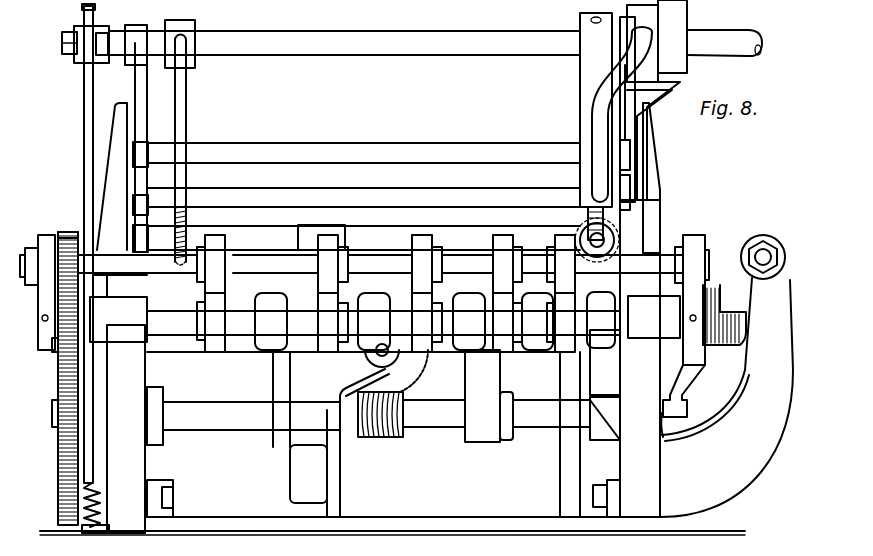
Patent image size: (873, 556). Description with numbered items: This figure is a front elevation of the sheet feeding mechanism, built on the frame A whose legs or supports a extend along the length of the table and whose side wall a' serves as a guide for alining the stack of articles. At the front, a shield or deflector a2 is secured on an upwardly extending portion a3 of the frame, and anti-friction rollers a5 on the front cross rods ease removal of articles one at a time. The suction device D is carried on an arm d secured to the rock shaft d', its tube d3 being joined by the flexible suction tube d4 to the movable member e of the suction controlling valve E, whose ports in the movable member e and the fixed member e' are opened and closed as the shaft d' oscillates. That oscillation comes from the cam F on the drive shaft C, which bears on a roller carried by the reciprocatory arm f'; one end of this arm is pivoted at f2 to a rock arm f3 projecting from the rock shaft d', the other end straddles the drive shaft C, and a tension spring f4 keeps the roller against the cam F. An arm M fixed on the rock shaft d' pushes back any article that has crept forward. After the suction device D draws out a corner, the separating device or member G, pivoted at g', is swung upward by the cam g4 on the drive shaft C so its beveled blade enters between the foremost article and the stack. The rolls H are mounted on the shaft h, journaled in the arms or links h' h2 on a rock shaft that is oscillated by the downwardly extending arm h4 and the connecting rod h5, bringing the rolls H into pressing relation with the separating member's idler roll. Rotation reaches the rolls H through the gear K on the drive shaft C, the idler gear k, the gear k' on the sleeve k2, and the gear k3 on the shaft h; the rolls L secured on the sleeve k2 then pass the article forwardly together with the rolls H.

The frame A is at (690, 521).
The drive shaft C is at (213, 430).
The suction device D is at (578, 232).
The suction controlling valve E is at (670, 20).
The cam F is at (100, 397).
The separating device or member G is at (724, 315).
The rolls H is at (338, 248).
The gear K is at (58, 468).
The rolls L is at (435, 321).
The arm or member M is at (182, 132).
The legs or supports a is at (393, 275).
The side wall a' is at (654, 149).
The shield or deflector a2 is at (147, 123).
The upwardly extending portion of the frame a3 is at (112, 176).
The anti-friction rollers a5 is at (377, 183).
The arm d is at (575, 110).
The rock shaft d' is at (345, 54).
The tube d3 is at (632, 210).
The suction tube d4 is at (592, 124).
The movable member of the valve e is at (642, 43).
The fixed member of the valve e' is at (672, 36).
The reciprocatory arm f' is at (73, 243).
The pivot f2 is at (76, 62).
The rock arm f3 is at (66, 31).
The tension spring f4 is at (100, 514).
The pivot g' is at (763, 243).
The cam g4 is at (490, 375).
The shaft h is at (383, 282).
The arm or link h' is at (37, 292).
The arm or link h2 is at (705, 268).
The downwardly extending arm h4 is at (690, 375).
The connecting rod h5 is at (665, 420).
The idler gear k is at (351, 337).
The gear k' is at (41, 361).
The sleeve k2 is at (180, 322).
The gear k3 is at (67, 232).